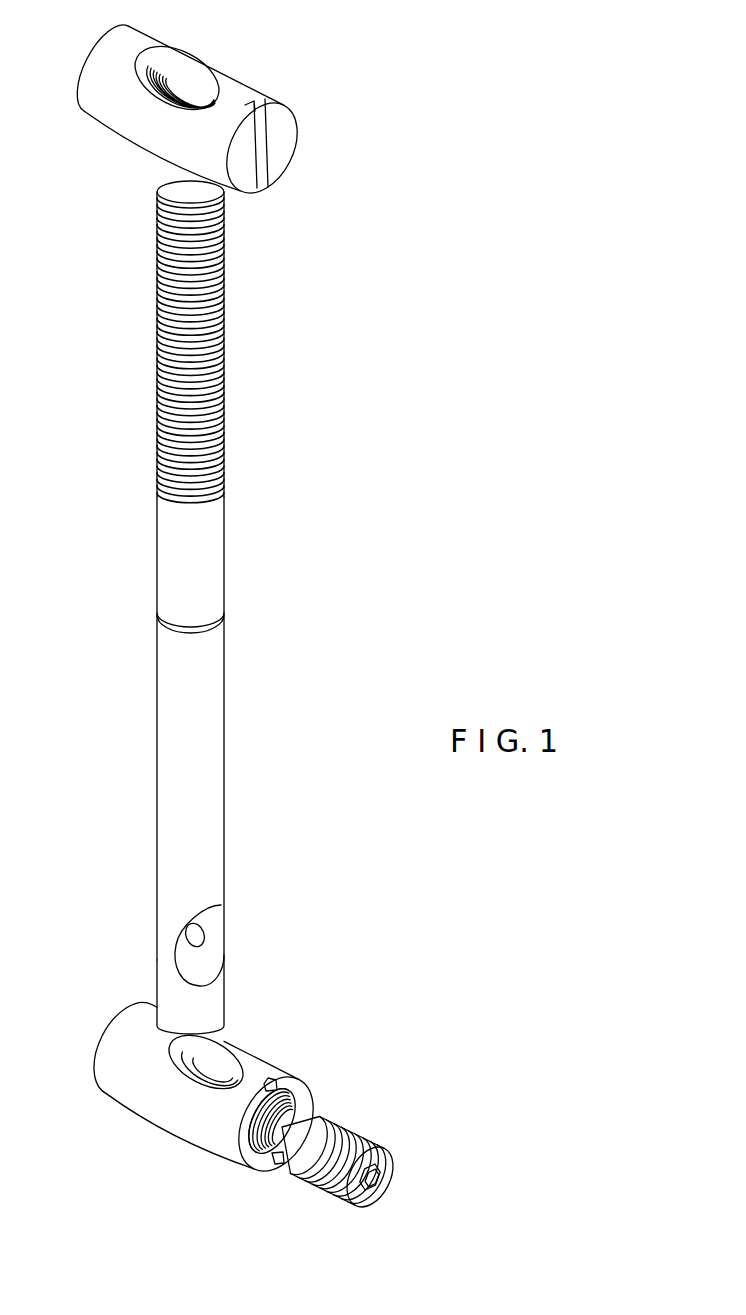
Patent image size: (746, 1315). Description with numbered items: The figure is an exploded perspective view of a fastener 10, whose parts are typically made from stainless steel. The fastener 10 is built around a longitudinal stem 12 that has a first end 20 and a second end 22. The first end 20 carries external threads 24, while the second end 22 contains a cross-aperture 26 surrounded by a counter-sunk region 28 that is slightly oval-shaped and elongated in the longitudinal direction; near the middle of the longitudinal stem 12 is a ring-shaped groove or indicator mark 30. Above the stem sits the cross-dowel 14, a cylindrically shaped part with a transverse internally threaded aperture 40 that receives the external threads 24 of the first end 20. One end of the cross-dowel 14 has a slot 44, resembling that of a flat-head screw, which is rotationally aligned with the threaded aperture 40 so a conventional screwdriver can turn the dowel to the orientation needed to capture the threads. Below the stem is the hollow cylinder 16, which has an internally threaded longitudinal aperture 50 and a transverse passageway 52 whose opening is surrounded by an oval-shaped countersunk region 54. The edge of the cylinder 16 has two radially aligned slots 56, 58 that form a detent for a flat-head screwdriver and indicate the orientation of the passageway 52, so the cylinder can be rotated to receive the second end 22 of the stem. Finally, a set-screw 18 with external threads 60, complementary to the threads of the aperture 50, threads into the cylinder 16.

The fastener 10 is at (417, 261).
The longitudinal stem 12 is at (230, 586).
The cross-dowel 14 is at (278, 95).
The cylinder 16 is at (276, 1083).
The set-screw 18 is at (366, 1128).
The first end 20 is at (141, 222).
The second end 22 is at (153, 984).
The external threads 24 is at (228, 358).
The cross-aperture 26 is at (201, 932).
The counter-sunk region 28 is at (214, 965).
The ring-shaped groove or indicator mark 30 is at (226, 614).
The transverse internally threaded aperture 40 is at (186, 74).
The slot 44 is at (259, 189).
The internally threaded longitudinal aperture 50 is at (303, 1098).
The transverse passageway 52 is at (199, 1058).
The oval-shaped countersunk region 54 is at (233, 1052).
The slot 56 is at (278, 1081).
The slot 58 is at (279, 1163).
The external threads 60 is at (370, 1144).